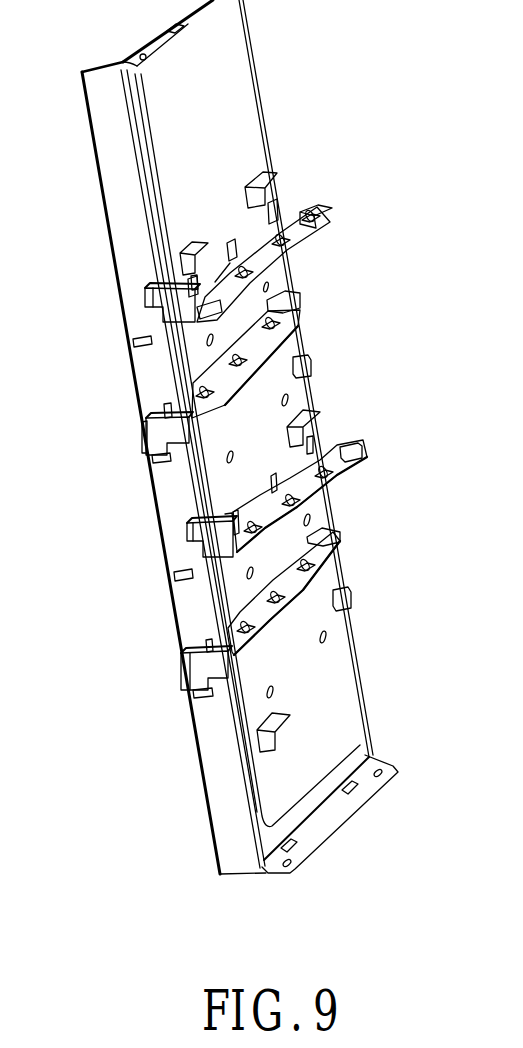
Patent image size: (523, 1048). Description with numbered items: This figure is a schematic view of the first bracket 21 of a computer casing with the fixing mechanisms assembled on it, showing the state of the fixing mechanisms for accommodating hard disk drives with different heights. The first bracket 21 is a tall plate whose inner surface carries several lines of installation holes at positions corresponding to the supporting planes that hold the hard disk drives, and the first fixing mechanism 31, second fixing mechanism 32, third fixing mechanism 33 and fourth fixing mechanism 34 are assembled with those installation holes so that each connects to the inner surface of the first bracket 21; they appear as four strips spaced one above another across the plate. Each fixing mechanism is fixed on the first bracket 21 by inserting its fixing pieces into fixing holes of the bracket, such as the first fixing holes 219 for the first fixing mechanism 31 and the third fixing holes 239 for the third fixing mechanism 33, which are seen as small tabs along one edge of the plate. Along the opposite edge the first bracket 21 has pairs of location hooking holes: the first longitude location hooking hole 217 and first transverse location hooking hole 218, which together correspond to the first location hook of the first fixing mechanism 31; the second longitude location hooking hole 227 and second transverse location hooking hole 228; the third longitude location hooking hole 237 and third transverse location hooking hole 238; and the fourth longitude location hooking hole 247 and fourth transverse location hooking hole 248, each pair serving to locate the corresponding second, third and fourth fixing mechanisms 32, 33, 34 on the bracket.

The first bracket 21 is at (232, 119).
The first fixing holes 219 is at (262, 182).
The first fixing mechanism 31 is at (293, 218).
The second fixing mechanism 32 is at (296, 322).
The third fixing mechanism 33 is at (338, 447).
The fourth fixing mechanism 34 is at (337, 553).
The first longitude location hooking hole 217 is at (147, 298).
The first transverse location hooking hole 218 is at (137, 345).
The second longitude location hooking hole 227 is at (145, 422).
The second transverse location hooking hole 228 is at (155, 459).
The third longitude location hooking hole 237 is at (187, 533).
The third transverse location hooking hole 238 is at (175, 580).
The third fixing holes 239 is at (313, 421).
The fourth longitude location hooking hole 247 is at (185, 653).
The fourth transverse location hooking hole 248 is at (197, 694).